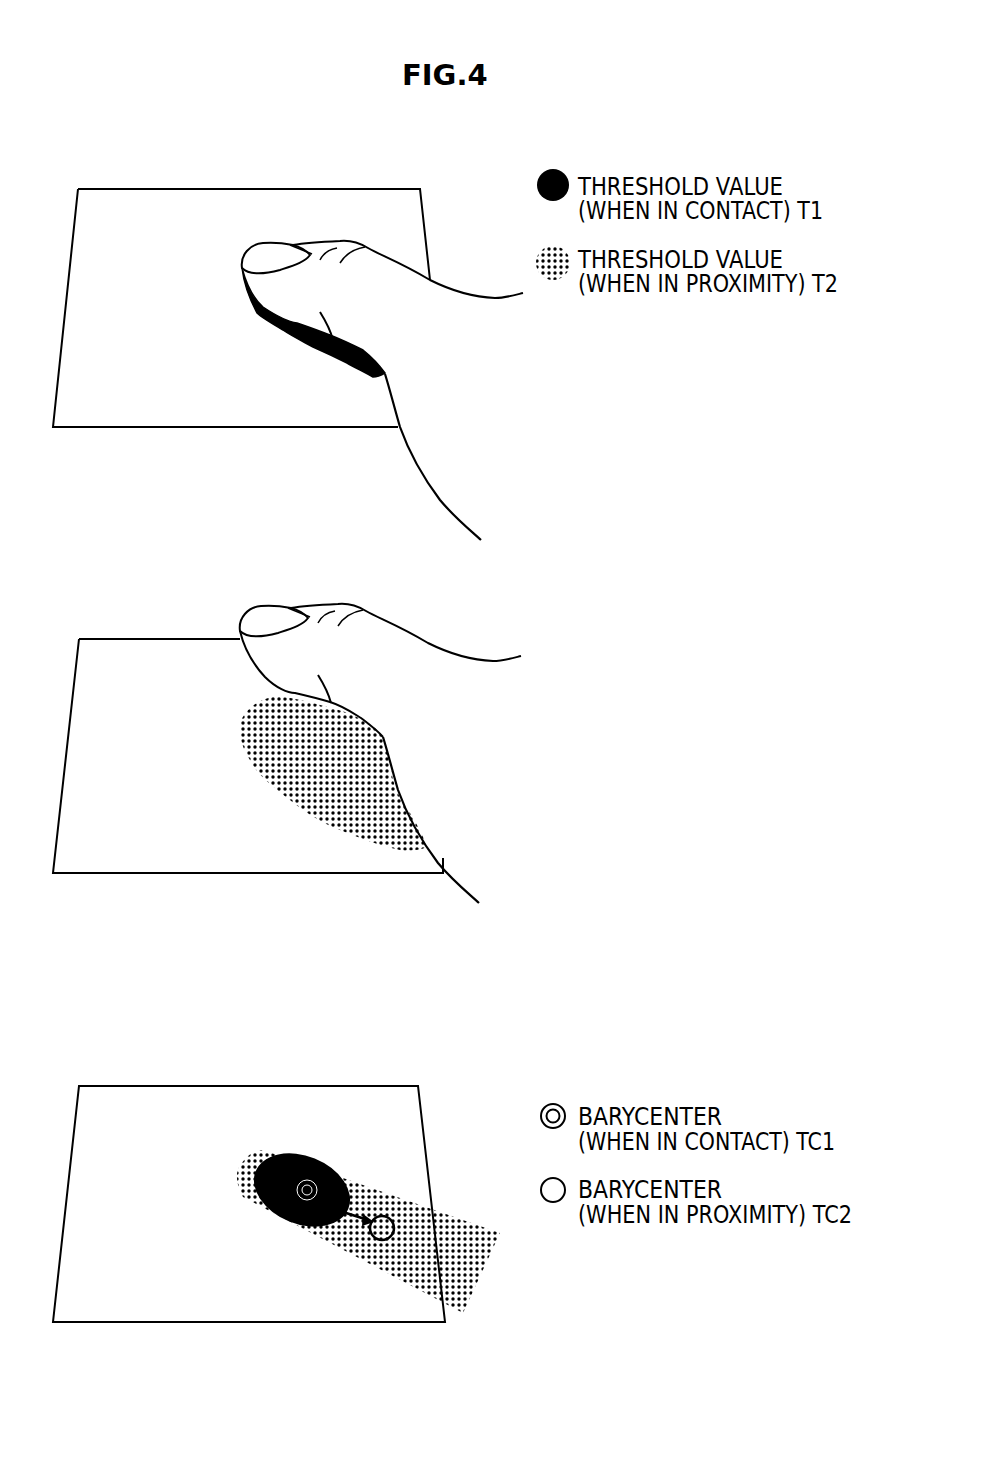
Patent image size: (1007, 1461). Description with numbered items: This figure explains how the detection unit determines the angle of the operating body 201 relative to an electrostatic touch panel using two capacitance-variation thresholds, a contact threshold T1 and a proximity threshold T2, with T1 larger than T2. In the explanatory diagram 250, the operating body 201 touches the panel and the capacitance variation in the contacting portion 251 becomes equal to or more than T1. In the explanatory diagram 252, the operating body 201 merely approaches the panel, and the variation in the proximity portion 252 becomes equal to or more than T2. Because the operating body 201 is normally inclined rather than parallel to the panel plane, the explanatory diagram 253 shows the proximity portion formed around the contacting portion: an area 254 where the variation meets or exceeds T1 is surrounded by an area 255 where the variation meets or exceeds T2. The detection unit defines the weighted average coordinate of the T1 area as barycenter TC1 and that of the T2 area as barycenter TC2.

The operating body 201 is at (445, 300).
The explanatory diagram 250 is at (137, 178).
The contacting portion 251 is at (324, 355).
The explanatory diagram / proximity portion 252 is at (137, 628).
The explanatory diagram 253 is at (137, 1076).
The area 254 is at (272, 1212).
The area 255 is at (330, 1245).